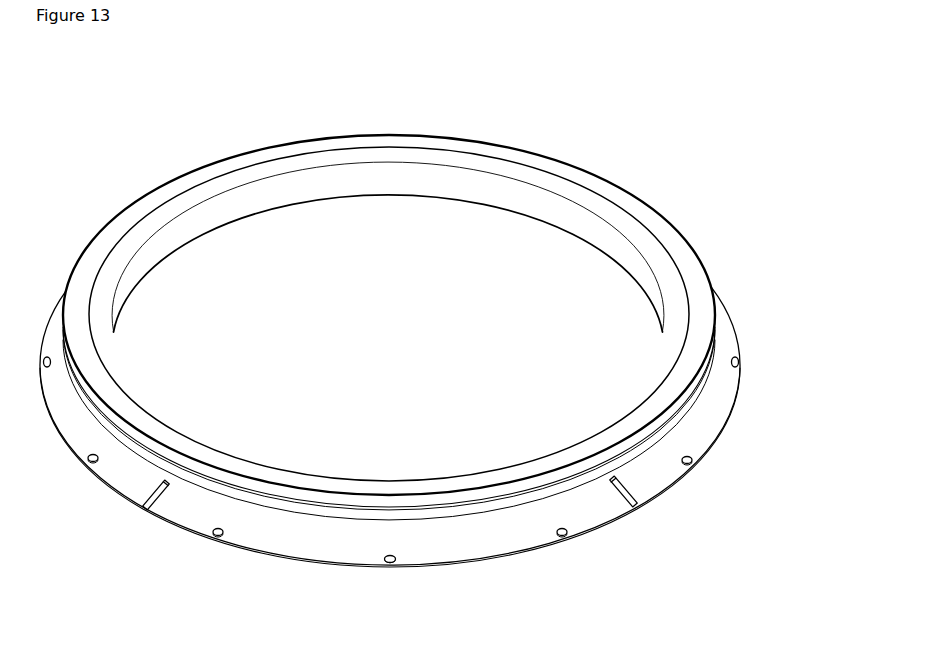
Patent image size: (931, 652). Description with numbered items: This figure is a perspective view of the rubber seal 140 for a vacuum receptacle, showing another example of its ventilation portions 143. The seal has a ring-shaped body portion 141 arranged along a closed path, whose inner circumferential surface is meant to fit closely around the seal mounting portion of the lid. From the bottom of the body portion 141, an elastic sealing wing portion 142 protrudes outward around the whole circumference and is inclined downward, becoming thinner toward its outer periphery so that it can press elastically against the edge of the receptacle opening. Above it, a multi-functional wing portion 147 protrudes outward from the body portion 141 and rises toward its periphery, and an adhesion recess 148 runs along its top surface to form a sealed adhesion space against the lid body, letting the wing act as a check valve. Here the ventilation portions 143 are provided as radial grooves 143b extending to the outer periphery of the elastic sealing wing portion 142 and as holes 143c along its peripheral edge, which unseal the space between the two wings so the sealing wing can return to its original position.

The rubber seal 140 is at (669, 144).
The body portion 141 is at (503, 194).
The elastic sealing wing portion 142 is at (476, 542).
The ventilation portions 143 is at (644, 488).
The radial grooves 143b is at (638, 508).
The holes 143c is at (210, 539).
The multi-functional wing portion 147 is at (648, 218).
The adhesion recess 148 is at (691, 298).